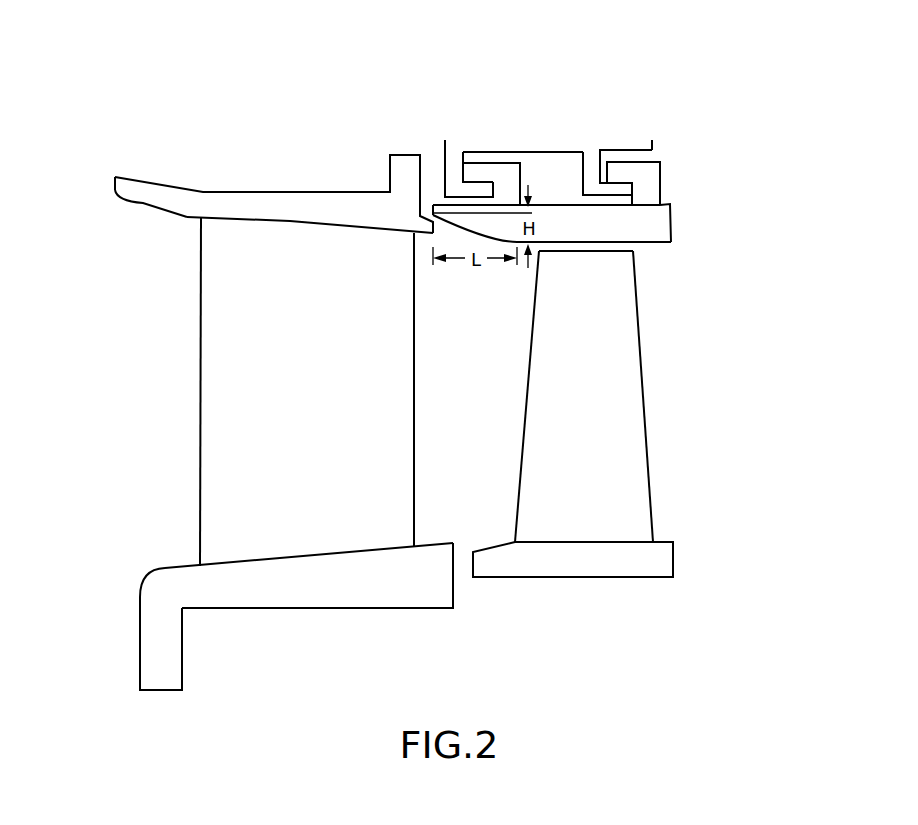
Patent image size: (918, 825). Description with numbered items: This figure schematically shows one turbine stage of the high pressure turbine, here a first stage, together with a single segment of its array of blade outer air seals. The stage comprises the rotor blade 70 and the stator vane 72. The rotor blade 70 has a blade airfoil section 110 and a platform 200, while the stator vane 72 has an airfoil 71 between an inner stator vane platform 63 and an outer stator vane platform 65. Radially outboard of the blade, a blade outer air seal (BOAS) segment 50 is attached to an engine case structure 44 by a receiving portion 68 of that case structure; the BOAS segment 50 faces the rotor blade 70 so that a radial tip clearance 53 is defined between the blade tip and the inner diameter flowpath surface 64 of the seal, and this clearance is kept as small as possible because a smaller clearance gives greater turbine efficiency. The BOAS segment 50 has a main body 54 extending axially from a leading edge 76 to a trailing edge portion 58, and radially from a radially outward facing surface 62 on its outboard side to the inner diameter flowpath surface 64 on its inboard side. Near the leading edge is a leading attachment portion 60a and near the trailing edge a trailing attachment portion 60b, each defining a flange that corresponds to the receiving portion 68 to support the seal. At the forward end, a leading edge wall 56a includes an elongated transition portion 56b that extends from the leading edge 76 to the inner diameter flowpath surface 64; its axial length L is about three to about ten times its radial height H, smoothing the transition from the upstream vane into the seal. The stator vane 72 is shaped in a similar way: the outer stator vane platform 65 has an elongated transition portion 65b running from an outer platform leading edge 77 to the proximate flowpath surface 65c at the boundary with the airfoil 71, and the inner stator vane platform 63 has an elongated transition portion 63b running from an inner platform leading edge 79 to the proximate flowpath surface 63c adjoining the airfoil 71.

The engine case structure 44 is at (652, 142).
The blade outer air seal segment 50 is at (657, 227).
The radial tip clearance 53 is at (642, 249).
The main body 54 is at (567, 233).
The leading edge wall 56a is at (463, 231).
The elongated transition portion 56b is at (483, 243).
The trailing edge portion 58 is at (672, 230).
The leading attachment portion 60a is at (508, 160).
The trailing attachment portion 60b is at (660, 182).
The radially outward facing surface 62 is at (548, 205).
The inner stator vane platform 63 is at (278, 599).
The elongated transition portion 63b is at (153, 572).
The proximate flowpath surface 63c is at (285, 555).
The inner diameter flowpath surface 64 is at (557, 243).
The outer stator vane platform 65 is at (272, 219).
The elongated transition portion 65b is at (142, 202).
The proximate flowpath surface 65c is at (280, 227).
The receiving portion 68 is at (465, 163).
The rotor blade 70 is at (666, 450).
The airfoil 71 is at (294, 418).
The stator vane 72 is at (197, 418).
The leading edge 76 is at (433, 203).
The outer platform leading edge 77 is at (115, 177).
The inner platform leading edge 79 is at (140, 618).
The blade airfoil 110 is at (568, 409).
The platform 200 is at (675, 566).